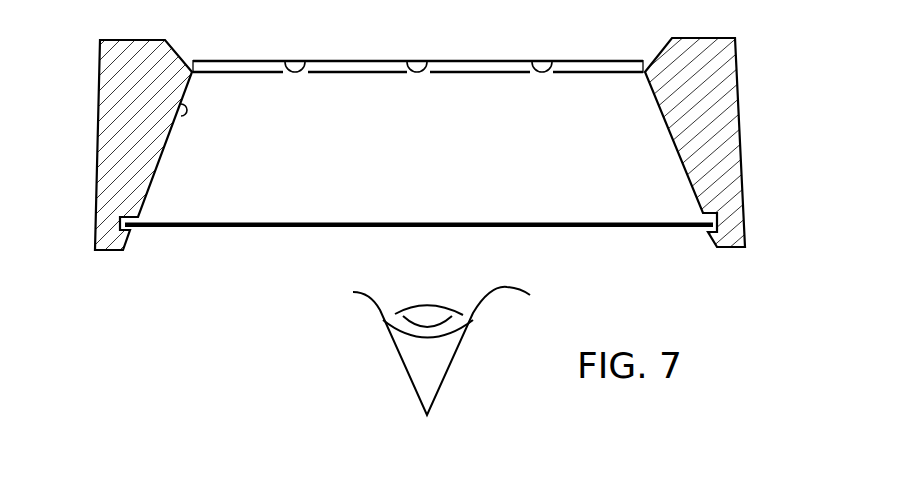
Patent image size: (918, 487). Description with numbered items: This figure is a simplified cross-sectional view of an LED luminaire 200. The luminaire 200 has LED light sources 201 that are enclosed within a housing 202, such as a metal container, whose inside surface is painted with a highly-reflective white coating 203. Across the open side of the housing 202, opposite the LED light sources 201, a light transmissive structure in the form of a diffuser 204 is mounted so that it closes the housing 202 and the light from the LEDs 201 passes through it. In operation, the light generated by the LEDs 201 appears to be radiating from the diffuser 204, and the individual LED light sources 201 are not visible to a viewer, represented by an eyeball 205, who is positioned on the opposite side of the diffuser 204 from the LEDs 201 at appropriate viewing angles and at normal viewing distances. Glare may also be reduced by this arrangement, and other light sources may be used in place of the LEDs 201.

The LED luminaire 200 is at (459, 142).
The LED light sources 201 is at (541, 62).
The housing 202 is at (150, 147).
The highly-reflective white coating 203 is at (183, 111).
The diffuser 204 is at (665, 228).
The eyeball 205 is at (400, 357).